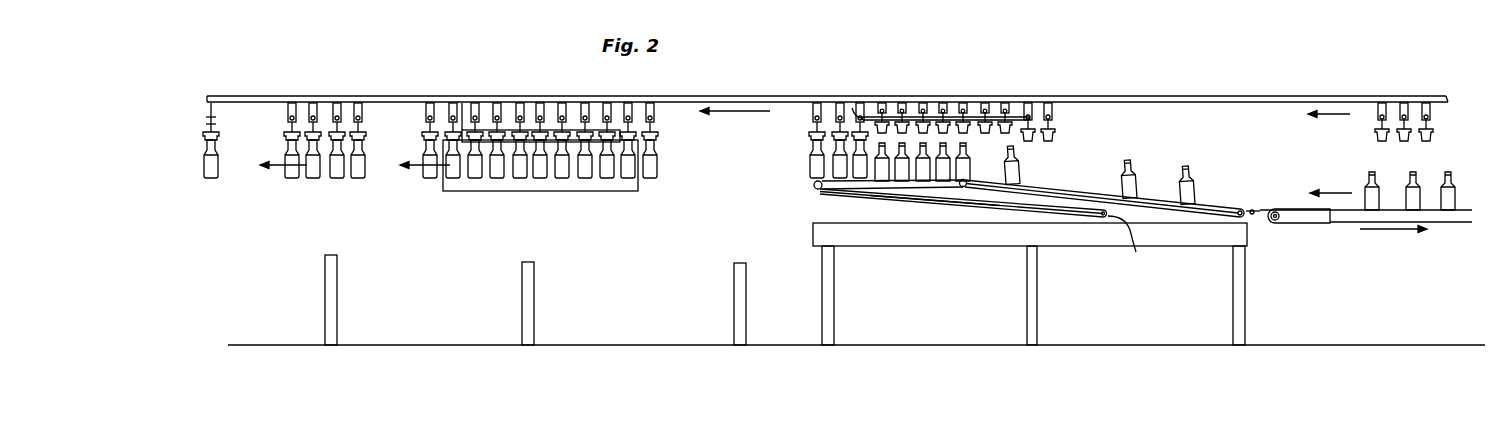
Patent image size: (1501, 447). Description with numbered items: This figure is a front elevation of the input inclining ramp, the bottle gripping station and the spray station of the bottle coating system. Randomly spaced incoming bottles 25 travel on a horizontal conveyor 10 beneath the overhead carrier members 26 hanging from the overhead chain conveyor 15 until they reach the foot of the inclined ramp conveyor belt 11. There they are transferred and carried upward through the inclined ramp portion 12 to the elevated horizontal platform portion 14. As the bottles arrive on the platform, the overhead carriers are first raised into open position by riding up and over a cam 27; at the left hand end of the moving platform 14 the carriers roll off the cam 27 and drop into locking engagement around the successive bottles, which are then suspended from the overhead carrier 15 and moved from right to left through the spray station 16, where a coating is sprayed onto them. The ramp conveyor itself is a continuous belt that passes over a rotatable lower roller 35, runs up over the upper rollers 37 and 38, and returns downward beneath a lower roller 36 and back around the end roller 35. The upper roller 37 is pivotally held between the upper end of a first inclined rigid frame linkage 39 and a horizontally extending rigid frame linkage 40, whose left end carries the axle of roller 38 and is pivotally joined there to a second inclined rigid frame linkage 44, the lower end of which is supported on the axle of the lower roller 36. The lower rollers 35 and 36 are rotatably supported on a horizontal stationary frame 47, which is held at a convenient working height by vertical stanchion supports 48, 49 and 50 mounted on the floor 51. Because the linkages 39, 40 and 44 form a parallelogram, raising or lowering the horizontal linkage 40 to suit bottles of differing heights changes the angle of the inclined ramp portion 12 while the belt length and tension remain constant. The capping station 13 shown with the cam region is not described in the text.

The horizontal conveyor 10 is at (1331, 217).
The inclined ramp conveyor belt 11 is at (1210, 197).
The inclined ramp portion 12 is at (1161, 183).
The capping station 13 is at (999, 93).
The horizontal platform portion 14 is at (802, 184).
The overhead chain conveyor 15 is at (1432, 95).
The spray station 16 is at (607, 196).
The incoming bottles 25 is at (1429, 170).
The overhead carrier members 26 is at (1369, 137).
The cam 27 is at (937, 117).
The lower roller 35 is at (1254, 206).
The lower roller 36 is at (1137, 254).
The upper roller 37 is at (958, 200).
The upper roller 38 is at (813, 194).
The first inclined rigid frame linkage 39 is at (1060, 190).
The horizontal frame linkage 40 is at (912, 191).
The second inclined rigid frame linkage 44 is at (1008, 205).
The horizontal stationary frame 47 is at (1078, 238).
The vertical stanchion support 48 is at (1247, 298).
The vertical stanchion support 49 is at (1040, 316).
The vertical stanchion support 50 is at (836, 322).
The floor 51 is at (1160, 344).